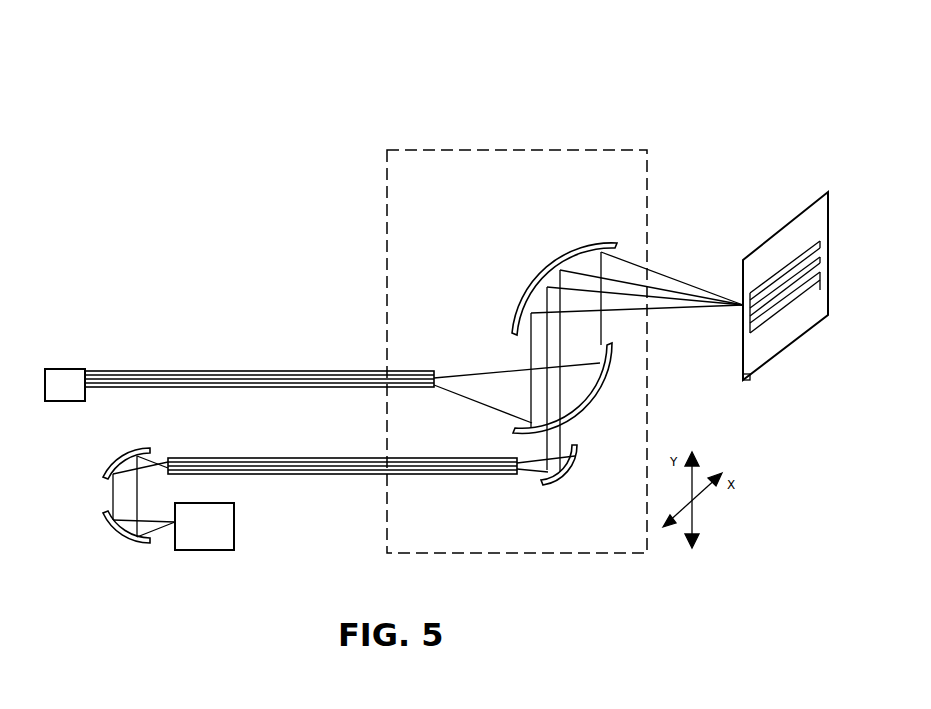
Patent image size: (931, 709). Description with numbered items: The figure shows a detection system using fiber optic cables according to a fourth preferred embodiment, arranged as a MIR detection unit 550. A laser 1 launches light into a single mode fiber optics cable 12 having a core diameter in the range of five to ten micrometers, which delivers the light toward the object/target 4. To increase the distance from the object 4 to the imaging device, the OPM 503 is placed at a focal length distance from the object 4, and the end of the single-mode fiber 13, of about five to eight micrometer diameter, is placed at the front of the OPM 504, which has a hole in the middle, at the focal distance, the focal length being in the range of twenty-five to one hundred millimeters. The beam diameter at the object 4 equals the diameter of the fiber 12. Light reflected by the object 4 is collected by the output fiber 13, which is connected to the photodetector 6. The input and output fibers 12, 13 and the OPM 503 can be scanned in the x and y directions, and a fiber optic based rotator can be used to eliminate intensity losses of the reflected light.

The MIR detection unit 550 is at (360, 106).
The OPM 503 is at (569, 253).
The OPM 504 is at (590, 391).
The object/target 4 is at (785, 286).
The single-mode fiber 13 is at (259, 365).
The single mode fiber optics cable 12 is at (342, 453).
The photodetector 6 is at (65, 385).
The laser 1 is at (168, 499).